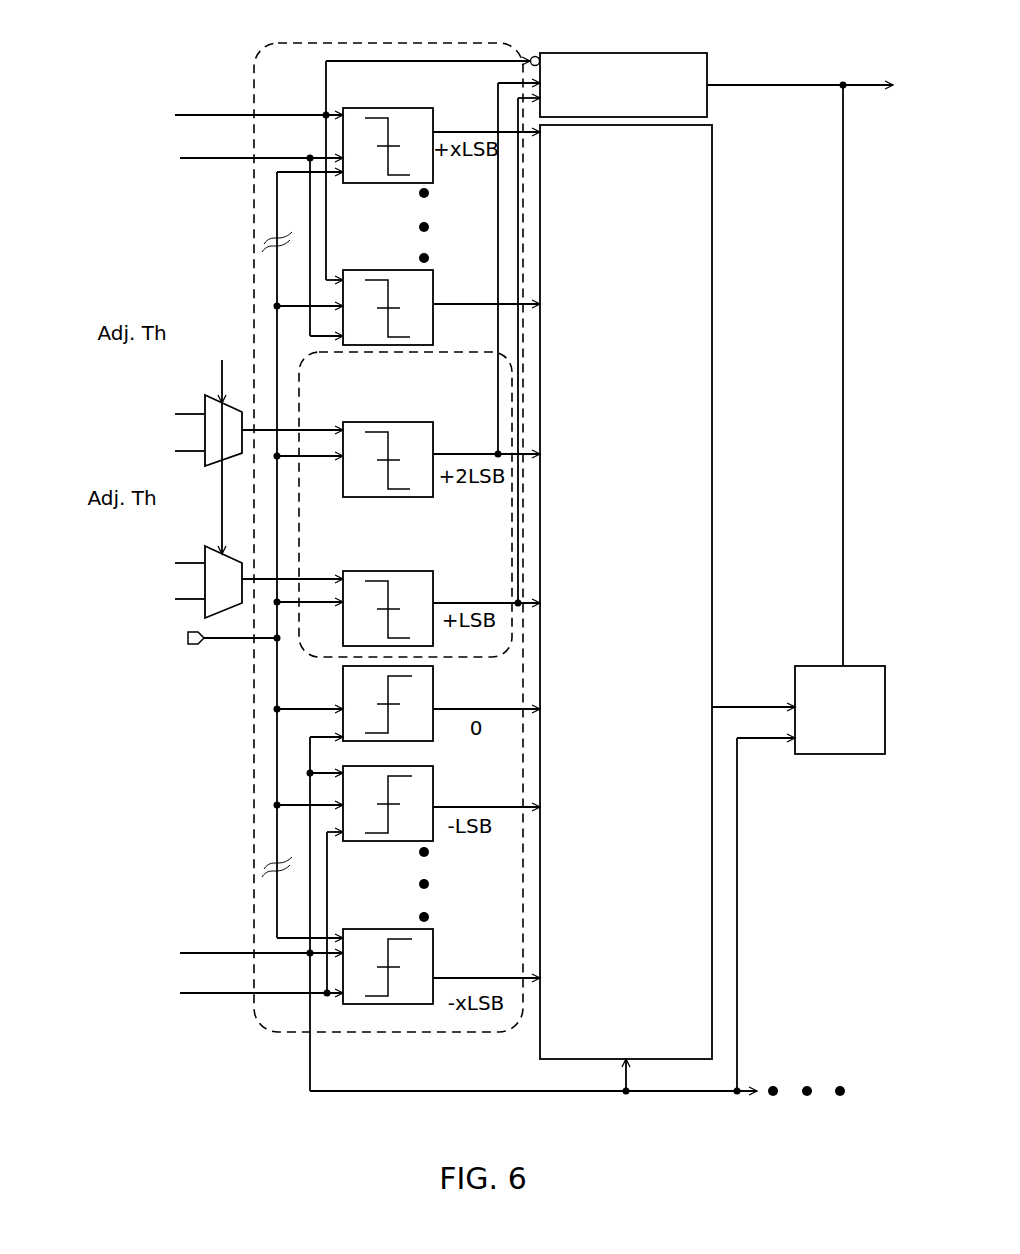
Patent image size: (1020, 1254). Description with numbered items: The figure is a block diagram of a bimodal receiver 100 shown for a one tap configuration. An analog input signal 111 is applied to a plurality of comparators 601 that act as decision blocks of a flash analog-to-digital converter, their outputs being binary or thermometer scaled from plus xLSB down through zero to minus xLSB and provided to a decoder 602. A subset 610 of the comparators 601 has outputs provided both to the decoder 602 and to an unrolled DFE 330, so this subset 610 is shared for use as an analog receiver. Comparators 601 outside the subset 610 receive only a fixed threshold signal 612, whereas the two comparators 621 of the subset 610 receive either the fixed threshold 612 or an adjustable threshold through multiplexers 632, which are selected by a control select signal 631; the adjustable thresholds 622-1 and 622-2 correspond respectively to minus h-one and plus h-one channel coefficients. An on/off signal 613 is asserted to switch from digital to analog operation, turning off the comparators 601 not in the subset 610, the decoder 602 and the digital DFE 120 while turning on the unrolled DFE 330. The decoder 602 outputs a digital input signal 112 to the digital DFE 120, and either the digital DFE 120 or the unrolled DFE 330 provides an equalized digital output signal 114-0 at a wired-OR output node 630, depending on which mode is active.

The bimodal receiver 100 is at (160, 38).
The comparators 601 is at (253, 221).
The subset of comparators 610 is at (312, 655).
The fixed threshold signal 612 is at (175, 115).
The on/off signal 613 is at (180, 158).
The control select signal 631 is at (208, 357).
The adjustable threshold 622-2 is at (196, 378).
The adjustable threshold 622-1 is at (188, 540).
The multiplexers 632 is at (205, 479).
The analog input signal 111 is at (186, 641).
The comparators of subset 621 is at (438, 428).
The unrolled DFE 330 is at (623, 85).
The decoder 602 is at (626, 592).
The digital DFE 120 is at (840, 710).
The equalized digital output signal 114-0 is at (872, 85).
The wired-OR output node 630 is at (843, 90).
The digital input signal 112 is at (722, 706).